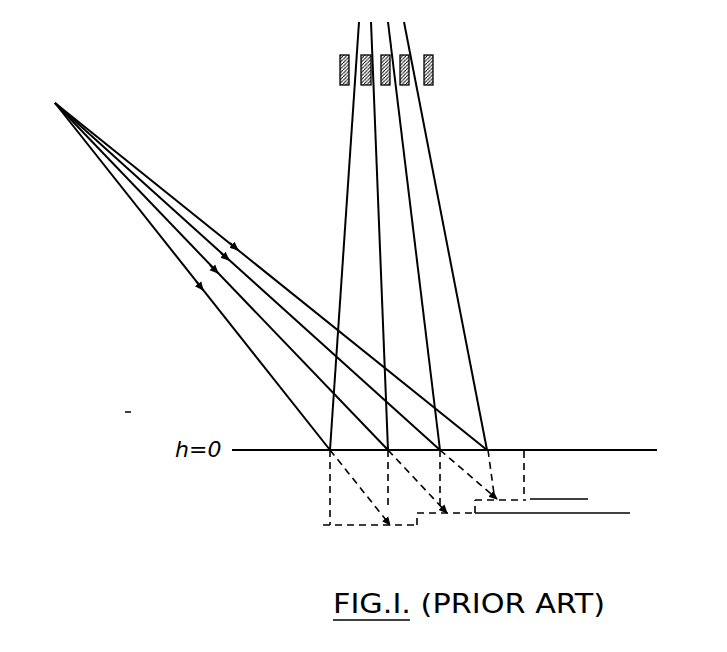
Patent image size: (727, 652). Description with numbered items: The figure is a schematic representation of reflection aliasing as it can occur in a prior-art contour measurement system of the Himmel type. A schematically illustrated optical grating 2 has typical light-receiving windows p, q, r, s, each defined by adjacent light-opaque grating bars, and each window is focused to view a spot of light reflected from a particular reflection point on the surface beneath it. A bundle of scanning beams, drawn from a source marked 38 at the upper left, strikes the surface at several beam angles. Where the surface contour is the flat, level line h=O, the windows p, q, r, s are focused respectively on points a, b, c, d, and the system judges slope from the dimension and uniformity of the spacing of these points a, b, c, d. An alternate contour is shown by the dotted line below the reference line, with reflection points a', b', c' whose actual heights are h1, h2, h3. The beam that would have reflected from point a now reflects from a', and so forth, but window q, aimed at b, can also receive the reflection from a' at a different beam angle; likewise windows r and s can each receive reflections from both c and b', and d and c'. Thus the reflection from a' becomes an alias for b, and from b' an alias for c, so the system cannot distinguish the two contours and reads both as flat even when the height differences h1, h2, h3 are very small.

The light source / point source of illumination 38 is at (98, 98).
The optical grating 2 is at (446, 68).
The light receiving window p is at (343, 236).
The light receiving window q is at (375, 236).
The light receiving window r is at (411, 236).
The light receiving window s is at (445, 236).
The reflection point a is at (360, 477).
The reflection point b is at (417, 472).
The reflection point c is at (468, 468).
The reflection point d is at (506, 464).
The contour height h1 is at (356, 523).
The contour height h2 is at (539, 513).
The contour height h3 is at (545, 495).